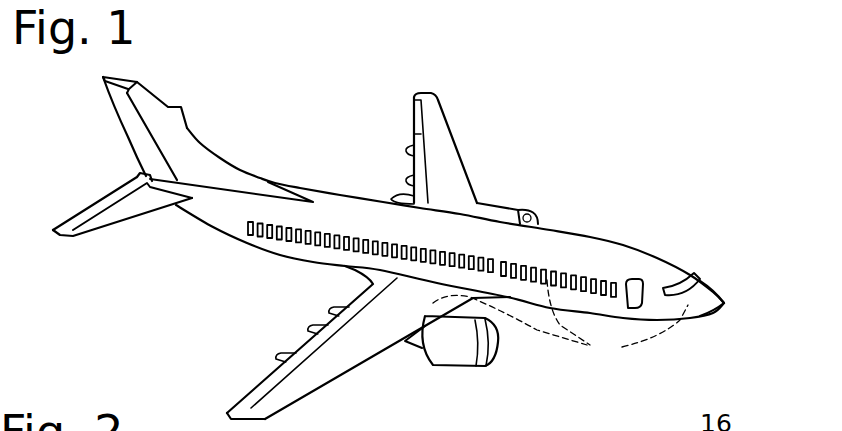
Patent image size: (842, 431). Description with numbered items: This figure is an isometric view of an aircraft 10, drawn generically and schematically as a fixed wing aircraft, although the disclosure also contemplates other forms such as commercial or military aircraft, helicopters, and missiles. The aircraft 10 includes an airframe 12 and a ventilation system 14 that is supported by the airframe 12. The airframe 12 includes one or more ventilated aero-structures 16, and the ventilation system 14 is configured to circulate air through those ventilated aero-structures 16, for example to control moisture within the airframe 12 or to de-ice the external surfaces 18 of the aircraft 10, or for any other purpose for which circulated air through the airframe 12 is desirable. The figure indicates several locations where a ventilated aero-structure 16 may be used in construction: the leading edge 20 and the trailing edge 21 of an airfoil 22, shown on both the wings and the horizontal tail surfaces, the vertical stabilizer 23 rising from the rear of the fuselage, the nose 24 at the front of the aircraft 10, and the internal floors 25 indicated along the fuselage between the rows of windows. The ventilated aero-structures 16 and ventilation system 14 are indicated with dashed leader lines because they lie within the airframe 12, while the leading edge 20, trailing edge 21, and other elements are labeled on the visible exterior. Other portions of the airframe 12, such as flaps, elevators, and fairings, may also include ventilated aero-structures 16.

The aircraft 10 is at (683, 169).
The airframe 12 is at (643, 223).
The ventilation system 14 is at (533, 253).
The ventilated aero-structures 16 is at (560, 319).
The external surfaces 18 is at (418, 318).
The leading edge 20 is at (364, 365).
The trailing edge 21 is at (260, 385).
The airfoil 22 is at (318, 392).
The vertical stabilizer 23 is at (123, 73).
The nose 24 is at (728, 303).
The internal floors 25 is at (365, 227).